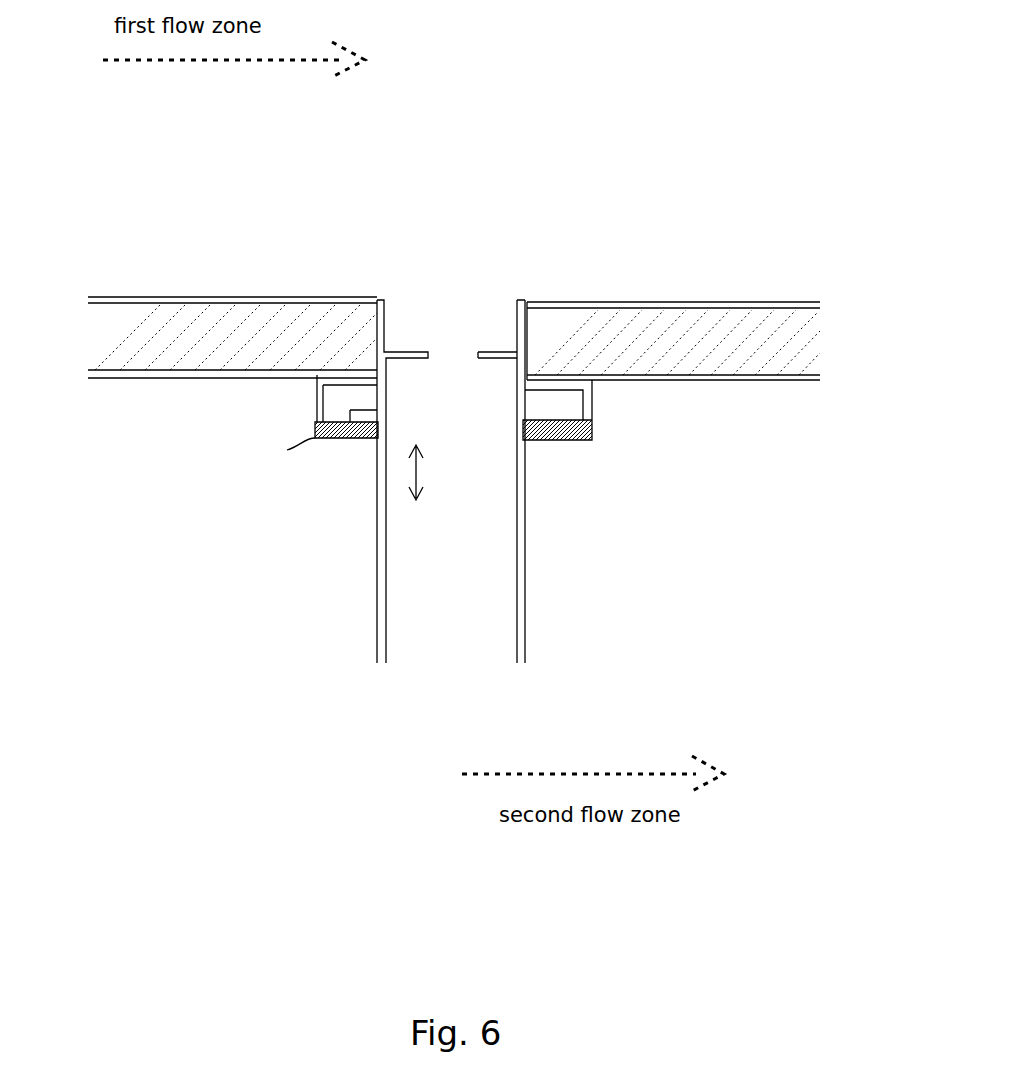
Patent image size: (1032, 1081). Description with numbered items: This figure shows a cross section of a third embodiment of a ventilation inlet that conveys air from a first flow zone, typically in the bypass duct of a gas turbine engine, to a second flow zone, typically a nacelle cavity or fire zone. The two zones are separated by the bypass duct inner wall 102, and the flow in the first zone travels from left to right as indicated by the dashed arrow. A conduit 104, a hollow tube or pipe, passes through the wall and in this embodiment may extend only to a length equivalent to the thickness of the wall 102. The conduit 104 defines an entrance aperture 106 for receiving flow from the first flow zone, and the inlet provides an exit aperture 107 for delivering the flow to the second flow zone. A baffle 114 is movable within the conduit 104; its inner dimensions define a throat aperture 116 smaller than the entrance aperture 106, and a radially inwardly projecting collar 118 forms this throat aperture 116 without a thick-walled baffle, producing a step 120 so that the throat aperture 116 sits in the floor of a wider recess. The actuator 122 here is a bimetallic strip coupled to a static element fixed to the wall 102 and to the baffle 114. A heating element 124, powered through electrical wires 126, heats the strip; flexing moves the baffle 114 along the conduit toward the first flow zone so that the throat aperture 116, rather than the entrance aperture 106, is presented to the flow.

The bypass duct inner wall 102 is at (210, 352).
The conduit 104 is at (369, 345).
The entrance aperture 106 is at (397, 298).
The exit aperture 107 is at (402, 684).
The baffle 114 is at (536, 580).
The throat aperture 116 is at (460, 338).
The collar 118 is at (495, 338).
The step 120 is at (522, 300).
The actuator 122 is at (594, 445).
The heating element 124 is at (347, 455).
The electrical wires 126 is at (278, 471).